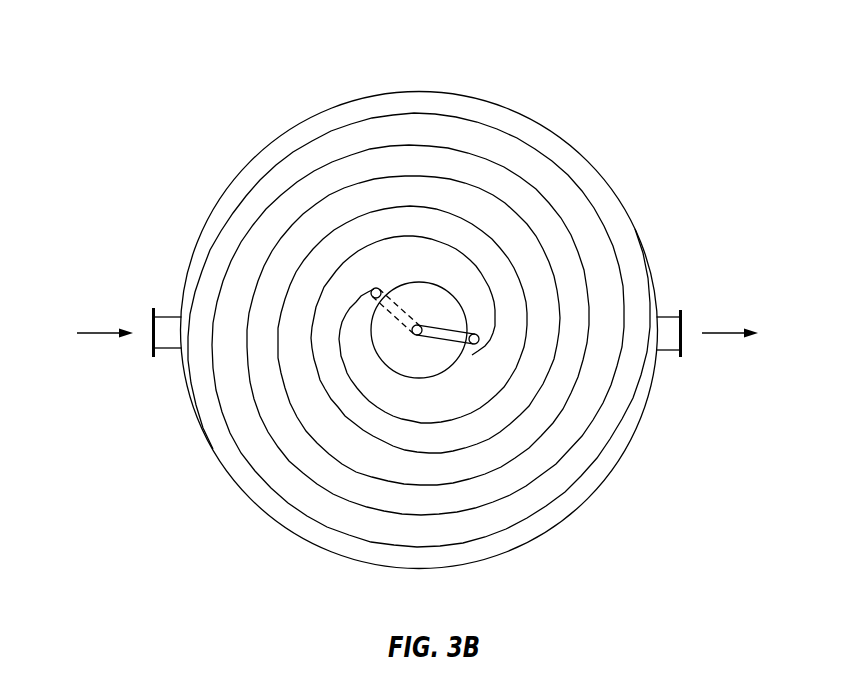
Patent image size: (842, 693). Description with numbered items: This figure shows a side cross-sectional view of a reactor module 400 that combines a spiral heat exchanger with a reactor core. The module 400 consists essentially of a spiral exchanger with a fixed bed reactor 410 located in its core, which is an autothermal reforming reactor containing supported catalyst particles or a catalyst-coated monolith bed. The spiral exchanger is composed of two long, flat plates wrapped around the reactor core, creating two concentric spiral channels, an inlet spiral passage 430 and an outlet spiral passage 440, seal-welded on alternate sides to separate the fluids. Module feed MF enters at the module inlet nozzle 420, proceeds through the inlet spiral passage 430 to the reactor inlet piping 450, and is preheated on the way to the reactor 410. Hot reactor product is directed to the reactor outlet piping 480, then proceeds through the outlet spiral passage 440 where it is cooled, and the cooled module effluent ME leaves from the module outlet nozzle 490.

The reactor module 400 is at (594, 86).
The fixed bed reactor 410 is at (396, 350).
The module inlet nozzle 420 is at (168, 317).
The inlet spiral passage 430 is at (212, 221).
The outlet spiral passage 440 is at (636, 413).
The reactor inlet piping 450 is at (402, 313).
The reactor outlet piping 480 is at (447, 341).
The module outlet nozzle 490 is at (670, 316).